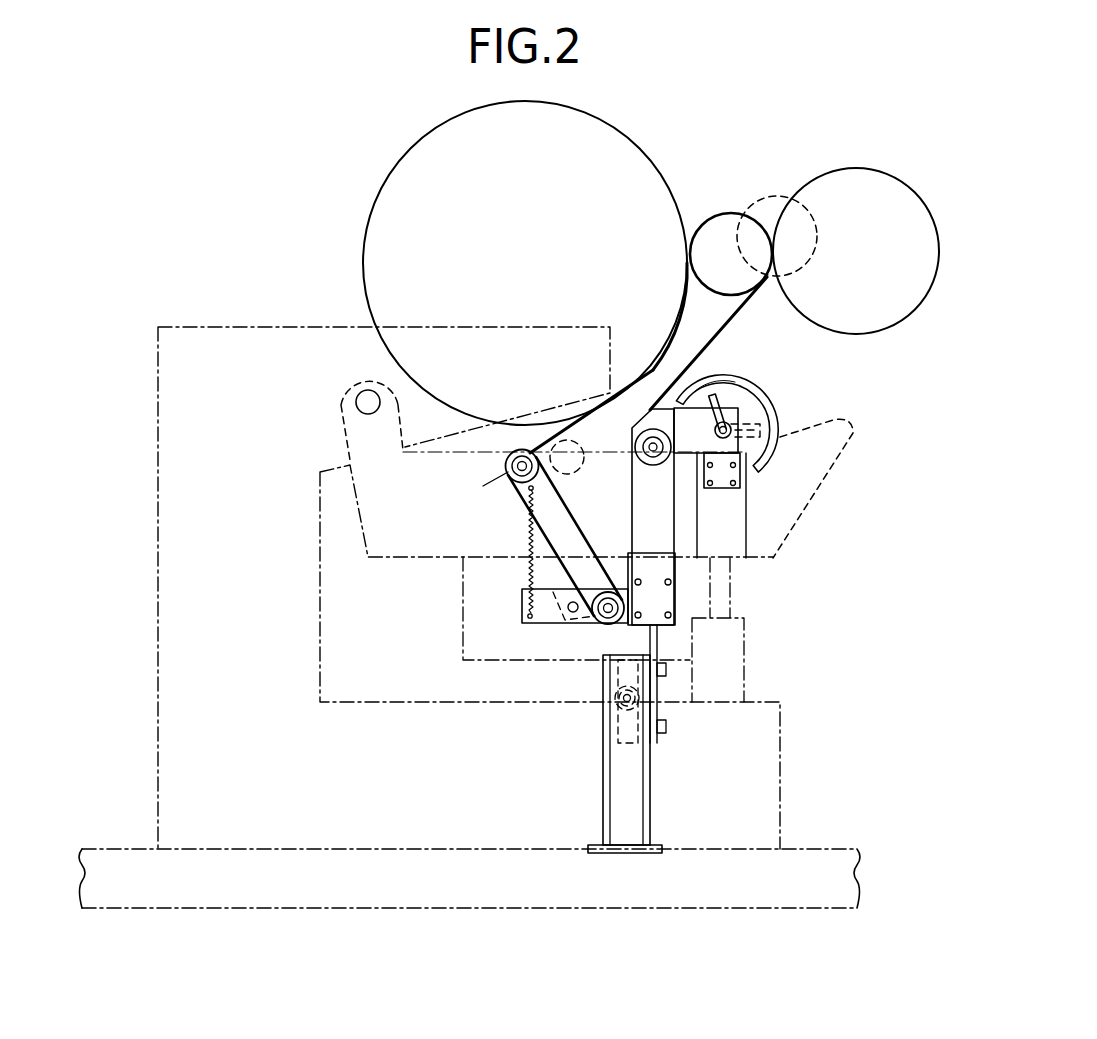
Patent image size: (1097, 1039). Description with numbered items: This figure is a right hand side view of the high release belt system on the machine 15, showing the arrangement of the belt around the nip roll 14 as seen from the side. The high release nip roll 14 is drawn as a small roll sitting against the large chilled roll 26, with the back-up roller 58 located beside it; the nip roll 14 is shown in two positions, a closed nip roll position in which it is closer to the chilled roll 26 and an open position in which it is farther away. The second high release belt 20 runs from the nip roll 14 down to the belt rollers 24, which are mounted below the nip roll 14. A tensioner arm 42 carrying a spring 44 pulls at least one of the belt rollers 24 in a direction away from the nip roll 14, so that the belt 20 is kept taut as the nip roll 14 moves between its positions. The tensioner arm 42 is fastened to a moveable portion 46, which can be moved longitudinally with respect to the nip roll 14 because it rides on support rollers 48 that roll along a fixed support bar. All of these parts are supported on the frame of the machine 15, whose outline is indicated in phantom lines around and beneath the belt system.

The high release nip roll 14 is at (716, 213).
The machine 15 is at (295, 819).
The second high release belt 20 is at (733, 325).
The belt rollers 24 is at (575, 473).
The chilled roll 26 is at (578, 196).
The tensioner arm 42 is at (567, 542).
The spring 44 is at (527, 541).
The moveable portion 46 is at (552, 627).
The support rollers 48 is at (617, 688).
The back-up roller 58 is at (890, 232).